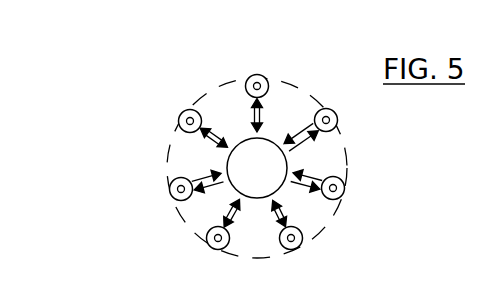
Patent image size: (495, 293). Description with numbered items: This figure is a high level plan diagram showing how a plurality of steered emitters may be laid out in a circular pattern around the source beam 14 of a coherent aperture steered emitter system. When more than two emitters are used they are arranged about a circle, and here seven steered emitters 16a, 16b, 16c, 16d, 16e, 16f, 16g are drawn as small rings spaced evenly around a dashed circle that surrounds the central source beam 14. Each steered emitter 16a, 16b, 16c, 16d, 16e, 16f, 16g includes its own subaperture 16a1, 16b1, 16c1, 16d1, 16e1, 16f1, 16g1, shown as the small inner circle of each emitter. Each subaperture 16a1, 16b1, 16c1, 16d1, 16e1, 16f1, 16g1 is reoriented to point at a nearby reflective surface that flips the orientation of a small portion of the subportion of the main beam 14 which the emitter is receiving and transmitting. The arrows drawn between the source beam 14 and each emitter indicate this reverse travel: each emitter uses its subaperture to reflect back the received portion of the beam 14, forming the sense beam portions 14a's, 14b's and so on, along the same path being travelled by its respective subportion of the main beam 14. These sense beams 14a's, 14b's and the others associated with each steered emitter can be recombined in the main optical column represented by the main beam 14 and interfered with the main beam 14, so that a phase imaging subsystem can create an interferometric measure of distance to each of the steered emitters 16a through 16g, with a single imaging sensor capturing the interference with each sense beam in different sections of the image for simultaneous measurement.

The source beam 14 is at (242, 177).
The sense beam portion 14a's is at (142, 158).
The sense beam portion 14b's is at (142, 119).
The steered emitter 16a is at (171, 186).
The subaperture 16a1 is at (181, 193).
The steered emitter 16b is at (181, 112).
The subaperture 16b1 is at (190, 117).
The steered emitter 16c is at (268, 80).
The subaperture 16c1 is at (253, 86).
The steered emitter 16d is at (336, 126).
The subaperture 16d1 is at (330, 121).
The steered emitter 16e is at (335, 200).
The subaperture 16e1 is at (337, 188).
The steered emitter 16f is at (302, 242).
The subaperture 16f1 is at (295, 242).
The steered emitter 16g is at (226, 245).
The subaperture 16g1 is at (217, 242).